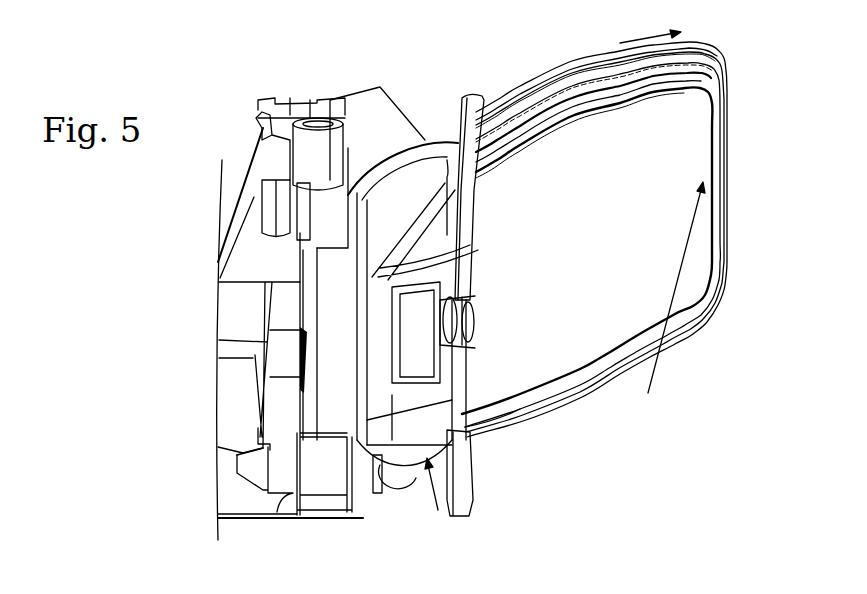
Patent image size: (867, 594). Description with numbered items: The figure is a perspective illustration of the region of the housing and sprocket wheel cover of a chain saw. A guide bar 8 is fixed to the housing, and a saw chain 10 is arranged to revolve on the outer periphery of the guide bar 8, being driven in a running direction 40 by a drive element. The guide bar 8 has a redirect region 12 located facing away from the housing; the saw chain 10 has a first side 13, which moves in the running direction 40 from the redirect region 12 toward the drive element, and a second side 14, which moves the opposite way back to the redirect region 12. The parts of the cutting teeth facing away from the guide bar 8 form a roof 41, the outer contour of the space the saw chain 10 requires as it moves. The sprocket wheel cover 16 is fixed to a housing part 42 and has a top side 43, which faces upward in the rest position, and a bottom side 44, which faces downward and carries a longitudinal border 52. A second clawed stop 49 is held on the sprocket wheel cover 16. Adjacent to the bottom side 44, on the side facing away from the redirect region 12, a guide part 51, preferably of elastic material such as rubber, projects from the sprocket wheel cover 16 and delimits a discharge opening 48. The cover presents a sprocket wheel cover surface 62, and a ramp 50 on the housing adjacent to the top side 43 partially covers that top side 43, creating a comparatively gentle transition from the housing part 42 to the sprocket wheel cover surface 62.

The guide bar 8 is at (562, 353).
The saw chain 10 is at (588, 80).
The redirect region 12 is at (671, 299).
The first side 13 is at (503, 433).
The second side 14 is at (550, 82).
The sprocket wheel cover 16 is at (433, 185).
The running direction 40 is at (650, 31).
The roof 41 is at (512, 105).
The housing part 42 is at (243, 410).
The top side 43 is at (402, 150).
The bottom side 44 is at (437, 495).
The discharge opening 48 is at (373, 497).
The second clawed stop 49 is at (462, 490).
The ramp 50 is at (368, 142).
The guide part 51 is at (312, 502).
The longitudinal border 52 is at (383, 493).
The sprocket wheel cover surface 62 is at (395, 205).